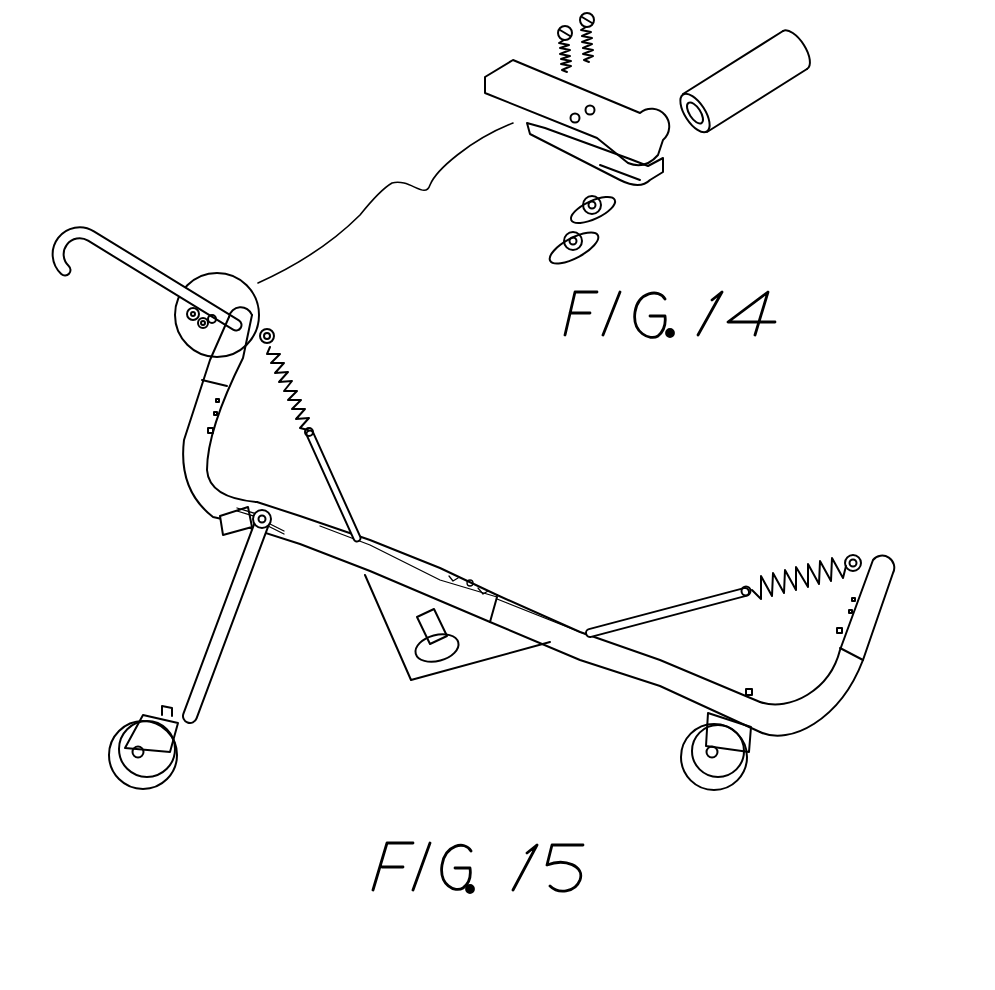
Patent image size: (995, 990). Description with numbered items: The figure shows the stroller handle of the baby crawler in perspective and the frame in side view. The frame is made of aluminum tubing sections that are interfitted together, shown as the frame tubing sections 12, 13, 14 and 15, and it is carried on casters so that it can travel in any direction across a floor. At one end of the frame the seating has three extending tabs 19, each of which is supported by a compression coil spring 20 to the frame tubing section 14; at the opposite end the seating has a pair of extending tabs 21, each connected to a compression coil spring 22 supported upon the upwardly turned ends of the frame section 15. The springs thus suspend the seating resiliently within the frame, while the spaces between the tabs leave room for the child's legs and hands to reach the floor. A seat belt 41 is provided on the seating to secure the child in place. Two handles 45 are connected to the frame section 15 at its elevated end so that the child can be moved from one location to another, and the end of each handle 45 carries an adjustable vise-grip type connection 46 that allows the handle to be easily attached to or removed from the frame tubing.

In FIG. 15, the frame tubing section 12 is at (403, 573).
In FIG. 15, the frame tubing section 13 is at (585, 652).
In FIG. 15, the frame tubing section 14 is at (883, 573).
In FIG. 15, the frame section 15 is at (252, 325).
In FIG. 14, the frame section 15 is at (770, 118).
In FIG. 15, the extending tabs 19 is at (690, 604).
In FIG. 15, the compression coil springs 20 is at (803, 573).
In FIG. 15, the extending tabs 21 is at (343, 496).
In FIG. 15, the compression coil spring 22 is at (306, 424).
In FIG. 15, the seat belt 41 is at (441, 657).
In FIG. 15, the handle 45 is at (86, 230).
In FIG. 14, the handle 45 is at (530, 93).
In FIG. 14, the adjustable vise-grip type connection 46 is at (582, 158).